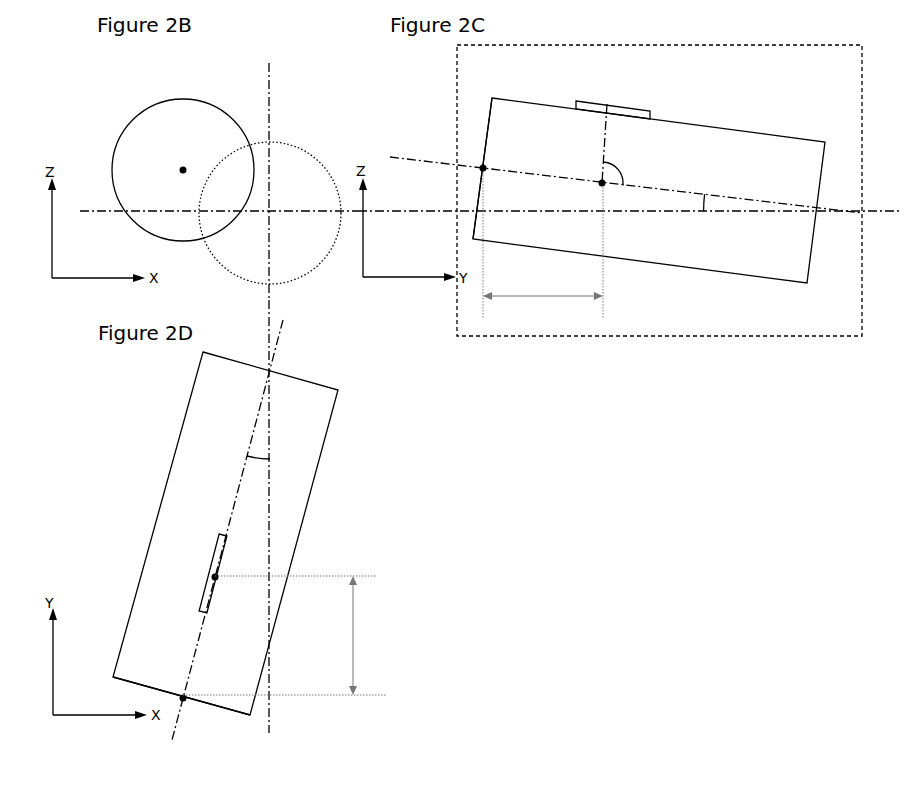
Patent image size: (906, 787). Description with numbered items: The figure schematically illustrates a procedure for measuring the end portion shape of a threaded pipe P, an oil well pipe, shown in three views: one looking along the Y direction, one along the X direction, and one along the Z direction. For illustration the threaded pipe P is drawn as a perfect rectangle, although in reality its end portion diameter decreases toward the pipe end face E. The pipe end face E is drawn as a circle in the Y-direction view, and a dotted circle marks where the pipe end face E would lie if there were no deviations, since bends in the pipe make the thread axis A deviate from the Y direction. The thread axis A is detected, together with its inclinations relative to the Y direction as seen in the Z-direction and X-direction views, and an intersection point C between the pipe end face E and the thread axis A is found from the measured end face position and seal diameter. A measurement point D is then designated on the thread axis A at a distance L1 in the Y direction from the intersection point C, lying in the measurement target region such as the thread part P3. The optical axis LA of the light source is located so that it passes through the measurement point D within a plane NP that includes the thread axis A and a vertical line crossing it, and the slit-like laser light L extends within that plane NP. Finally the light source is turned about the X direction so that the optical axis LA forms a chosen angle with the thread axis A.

In FIG. 2B, the pipe end face E is at (130, 118).
In FIG. 2C, the pipe end face E is at (490, 115).
In FIG. 2D, the pipe end face E is at (147, 685).
In FIG. 2B, the intersection point C is at (183, 170).
In FIG. 2C, the intersection point C is at (483, 168).
In FIG. 2D, the intersection point C is at (183, 698).
In FIG. 2C, the measurement point D is at (602, 183).
In FIG. 2D, the measurement point D is at (215, 577).
In FIG. 2C, the threaded pipe P is at (707, 287).
In FIG. 2D, the threaded pipe P is at (333, 473).
In FIG. 2B, the thread part P3 is at (260, 152).
In FIG. 2C, the laser light L is at (648, 108).
In FIG. 2D, the laser light L is at (228, 530).
In FIG. 2C, the optical axis LA is at (612, 97).
In FIG. 2C, the plane NP is at (635, 337).
In FIG. 2D, the plane NP is at (271, 358).
In FIG. 2C, the thread axis A is at (392, 162).
In FIG. 2D, the thread axis A is at (283, 327).
In FIG. 2C, the distance L1 is at (543, 247).
In FIG. 2D, the distance L1 is at (285, 635).